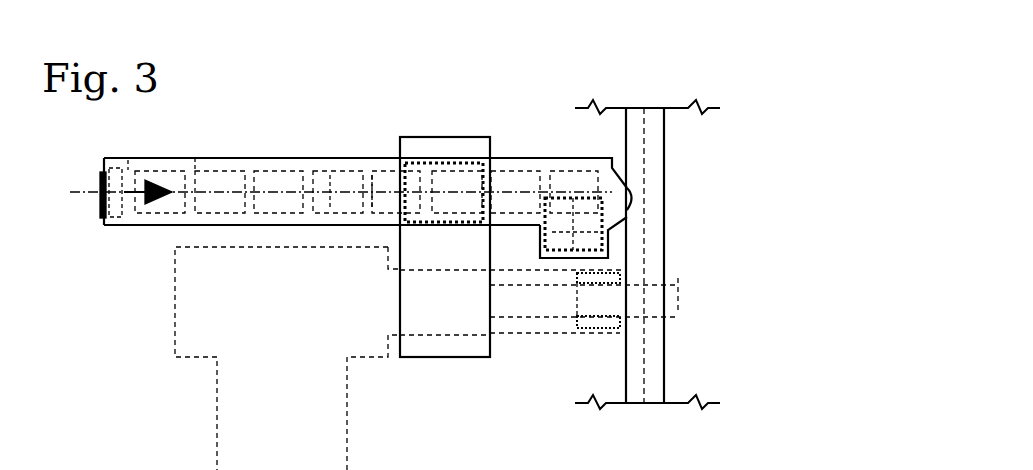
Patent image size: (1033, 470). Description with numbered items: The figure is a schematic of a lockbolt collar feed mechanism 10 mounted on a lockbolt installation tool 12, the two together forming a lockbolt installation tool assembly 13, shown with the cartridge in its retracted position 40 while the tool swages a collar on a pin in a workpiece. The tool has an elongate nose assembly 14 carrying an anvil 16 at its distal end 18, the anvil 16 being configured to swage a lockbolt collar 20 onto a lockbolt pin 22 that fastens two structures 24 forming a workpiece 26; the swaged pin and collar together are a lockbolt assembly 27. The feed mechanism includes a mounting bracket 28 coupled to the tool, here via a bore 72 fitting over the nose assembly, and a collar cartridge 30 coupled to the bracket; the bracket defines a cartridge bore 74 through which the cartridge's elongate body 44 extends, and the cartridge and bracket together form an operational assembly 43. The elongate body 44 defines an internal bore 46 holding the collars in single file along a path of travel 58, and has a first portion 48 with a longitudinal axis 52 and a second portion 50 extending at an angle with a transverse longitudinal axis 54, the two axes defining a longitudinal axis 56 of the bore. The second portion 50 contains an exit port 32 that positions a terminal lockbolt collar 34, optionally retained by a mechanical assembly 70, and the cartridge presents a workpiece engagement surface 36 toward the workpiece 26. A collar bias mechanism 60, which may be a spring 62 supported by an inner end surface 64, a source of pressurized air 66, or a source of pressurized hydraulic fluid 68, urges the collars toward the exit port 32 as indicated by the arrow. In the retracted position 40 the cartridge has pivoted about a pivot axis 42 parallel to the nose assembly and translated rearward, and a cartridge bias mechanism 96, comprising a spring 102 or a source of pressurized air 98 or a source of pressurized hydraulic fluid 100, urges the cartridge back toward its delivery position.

The lockbolt collar feed mechanism 10 is at (515, 90).
The lockbolt installation tool 12 is at (148, 322).
The lockbolt installation tool assembly 13 is at (457, 90).
The elongate nose assembly 14 is at (413, 332).
The anvil 16 is at (580, 327).
The distal end 18 is at (632, 322).
The lockbolt collar 20 is at (317, 158).
The lockbolt pin 22 is at (680, 284).
The structure 24 is at (627, 125).
The workpiece 26 is at (666, 240).
The lockbolt assembly 27 is at (679, 314).
The mounting bracket 28 is at (413, 136).
The collar cartridge 30 is at (178, 142).
The exit port 32 is at (580, 318).
The terminal lockbolt collar 34 is at (612, 235).
The workpiece engagement surface 36 is at (632, 193).
The retracted position 40 is at (562, 105).
The pivot axis 42 is at (337, 183).
The operational assembly 43 is at (433, 162).
The elongate body 44 is at (158, 156).
The internal bore 46 is at (262, 222).
The first portion 48 is at (206, 157).
The second portion 50 is at (540, 257).
The longitudinal axis 52 is at (372, 185).
The longitudinal axis 54 is at (545, 244).
The longitudinal axis 56 is at (503, 188).
The path of travel 58 is at (563, 190).
The collar bias mechanism 60 is at (100, 178).
The spring 62 is at (128, 168).
The inner end surface 64 is at (113, 205).
The source of pressurized air 66 is at (100, 197).
The source of pressurized hydraulic fluid 68 is at (98, 207).
The mechanical assembly 70 is at (613, 245).
The bore 72 is at (463, 320).
The cartridge bore 74 is at (447, 180).
The cartridge bias mechanism 96 is at (420, 228).
The source of pressurized air 98 is at (392, 260).
The source of pressurized hydraulic fluid 100 is at (440, 228).
The spring 102 is at (450, 228).